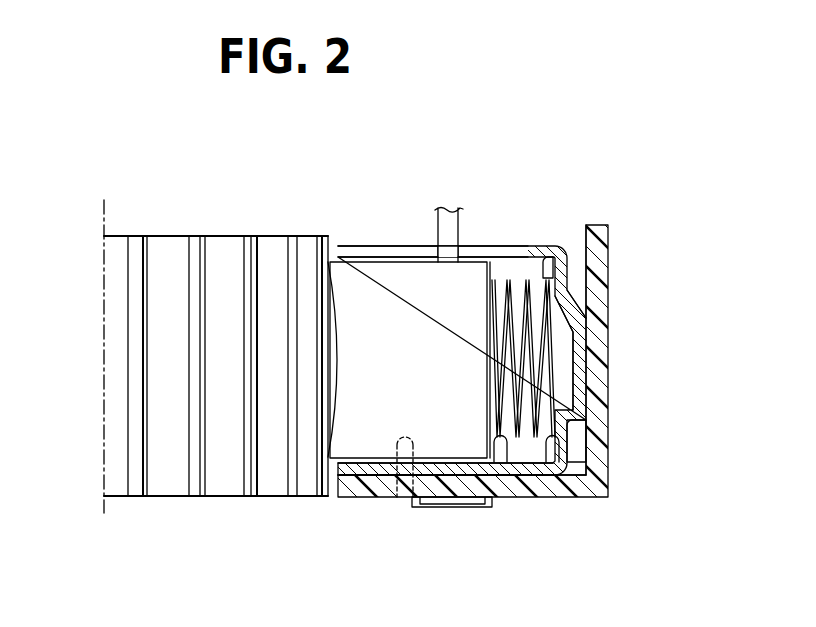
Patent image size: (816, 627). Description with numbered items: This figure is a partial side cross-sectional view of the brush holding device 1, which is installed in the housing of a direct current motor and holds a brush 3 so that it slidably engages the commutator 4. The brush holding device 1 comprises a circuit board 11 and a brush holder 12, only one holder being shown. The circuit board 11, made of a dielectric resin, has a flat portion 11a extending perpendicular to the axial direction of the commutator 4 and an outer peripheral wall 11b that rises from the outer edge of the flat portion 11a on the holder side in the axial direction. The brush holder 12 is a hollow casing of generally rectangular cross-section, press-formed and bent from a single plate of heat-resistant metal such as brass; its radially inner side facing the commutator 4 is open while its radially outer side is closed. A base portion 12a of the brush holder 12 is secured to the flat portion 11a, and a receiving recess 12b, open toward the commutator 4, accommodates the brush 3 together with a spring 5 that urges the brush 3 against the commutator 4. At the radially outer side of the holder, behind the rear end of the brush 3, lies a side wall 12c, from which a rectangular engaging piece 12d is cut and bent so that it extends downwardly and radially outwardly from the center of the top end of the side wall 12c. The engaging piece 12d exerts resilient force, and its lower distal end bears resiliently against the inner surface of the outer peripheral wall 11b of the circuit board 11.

The brush holding device 1 is at (620, 173).
The brush 3 is at (410, 273).
The commutator 4 is at (223, 235).
The spring 5 is at (503, 323).
The circuit board 11 is at (602, 225).
The flat portion 11a is at (390, 490).
The outer peripheral wall 11b is at (602, 358).
The brush holder 12 is at (520, 245).
The base portion 12a is at (518, 468).
The receiving recess 12b is at (360, 264).
The side wall 12c is at (578, 427).
The engaging piece 12d is at (580, 318).